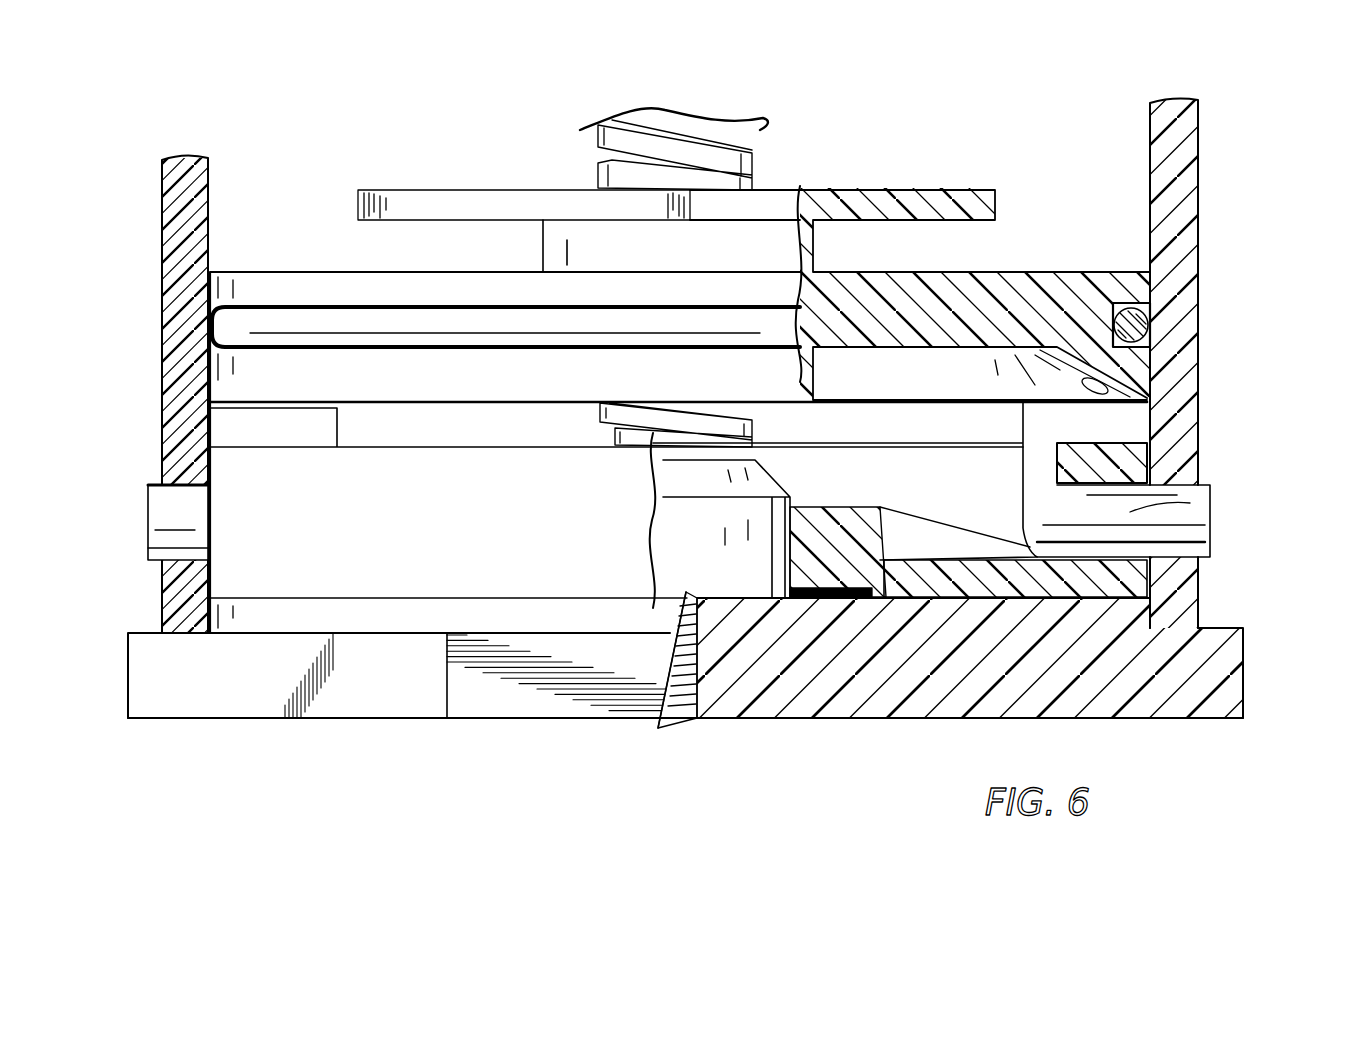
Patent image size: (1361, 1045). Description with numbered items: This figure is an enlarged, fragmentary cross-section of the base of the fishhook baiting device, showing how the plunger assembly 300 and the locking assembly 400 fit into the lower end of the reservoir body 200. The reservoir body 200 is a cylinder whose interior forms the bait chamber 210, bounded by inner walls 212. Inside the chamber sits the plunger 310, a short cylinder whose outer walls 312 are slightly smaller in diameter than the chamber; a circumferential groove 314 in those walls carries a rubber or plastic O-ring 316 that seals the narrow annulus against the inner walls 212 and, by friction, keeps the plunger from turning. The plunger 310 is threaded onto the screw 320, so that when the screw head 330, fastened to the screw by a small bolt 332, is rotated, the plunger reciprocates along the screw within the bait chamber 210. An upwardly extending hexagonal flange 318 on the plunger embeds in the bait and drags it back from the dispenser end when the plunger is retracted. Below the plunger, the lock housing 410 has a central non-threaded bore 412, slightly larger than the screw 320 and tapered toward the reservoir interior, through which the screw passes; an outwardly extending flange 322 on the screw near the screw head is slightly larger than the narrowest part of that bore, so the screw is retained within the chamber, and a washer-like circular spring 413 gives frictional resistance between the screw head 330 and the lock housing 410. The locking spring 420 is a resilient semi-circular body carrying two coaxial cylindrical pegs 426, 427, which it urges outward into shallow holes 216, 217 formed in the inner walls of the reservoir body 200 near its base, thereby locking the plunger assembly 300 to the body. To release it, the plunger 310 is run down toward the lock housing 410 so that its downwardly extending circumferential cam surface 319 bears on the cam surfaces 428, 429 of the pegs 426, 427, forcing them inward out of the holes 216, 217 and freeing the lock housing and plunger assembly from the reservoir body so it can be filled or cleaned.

The reservoir body 200 is at (161, 295).
The bait chamber 210 is at (454, 160).
The inner walls 212 is at (220, 196).
The bore 216 is at (172, 478).
The bore 217 is at (1200, 476).
The plunger assembly 300 is at (441, 745).
The plunger 310 is at (1136, 325).
The outer walls 312 is at (210, 378).
The circumferential groove 314 is at (1140, 340).
The O-ring 316 is at (1142, 318).
The hexagonal flange 318 is at (947, 205).
The cam surface 319 is at (1090, 380).
The screw 320 is at (762, 132).
The outwardly extending flange 322 is at (792, 506).
The screw head 330 is at (1212, 662).
The bolt 332 is at (690, 714).
The locking assembly 400 is at (124, 497).
The lock housing 410 is at (950, 470).
The non-threaded bore 412 is at (828, 554).
The circular spring 413 is at (819, 600).
The locking spring 420 is at (1212, 490).
The locking peg 426 is at (150, 513).
The locking peg 427 is at (1212, 510).
The cam surface 428 is at (210, 412).
The cam surface 429 is at (1120, 392).